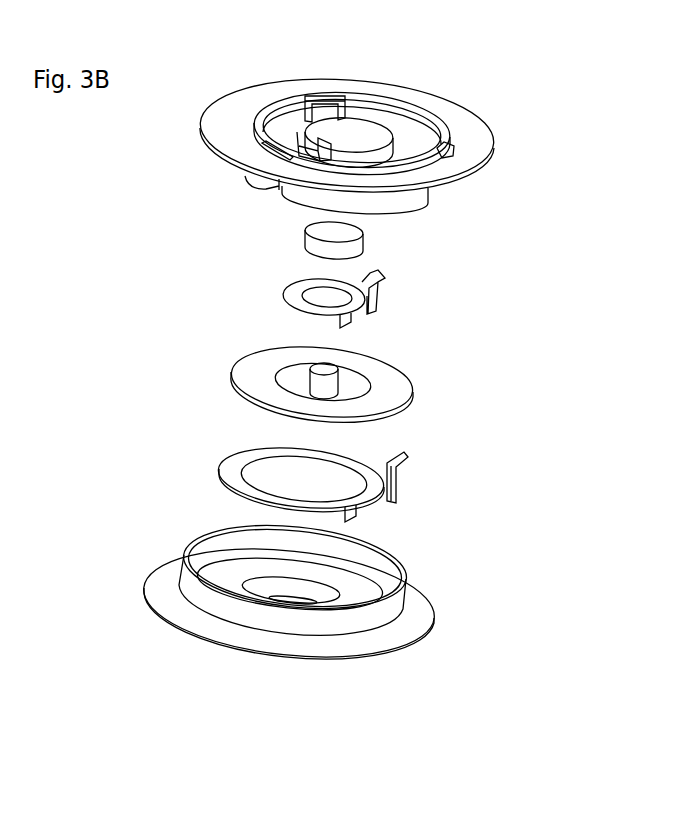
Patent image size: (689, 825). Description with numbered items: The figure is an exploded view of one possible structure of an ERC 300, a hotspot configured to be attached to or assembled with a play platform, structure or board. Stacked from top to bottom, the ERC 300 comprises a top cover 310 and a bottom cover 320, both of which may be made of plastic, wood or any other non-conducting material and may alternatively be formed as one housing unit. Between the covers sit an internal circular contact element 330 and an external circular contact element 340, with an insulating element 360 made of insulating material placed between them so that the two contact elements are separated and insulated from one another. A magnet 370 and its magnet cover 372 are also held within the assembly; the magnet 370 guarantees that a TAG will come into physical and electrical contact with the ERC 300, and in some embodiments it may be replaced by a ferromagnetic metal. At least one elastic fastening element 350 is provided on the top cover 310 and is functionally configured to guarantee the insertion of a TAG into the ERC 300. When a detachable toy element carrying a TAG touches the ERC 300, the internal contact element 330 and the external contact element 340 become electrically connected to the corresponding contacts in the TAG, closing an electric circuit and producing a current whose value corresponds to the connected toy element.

The ERC 300 is at (112, 176).
The top cover 310 is at (492, 142).
The bottom cover 320 is at (435, 617).
The internal circular contact element 330 is at (383, 286).
The external circular contact element 340 is at (408, 481).
The elastic fastening element 350 is at (325, 98).
The insulating element 360 is at (413, 391).
The magnet 370 is at (364, 243).
The magnet cover 372 is at (373, 125).